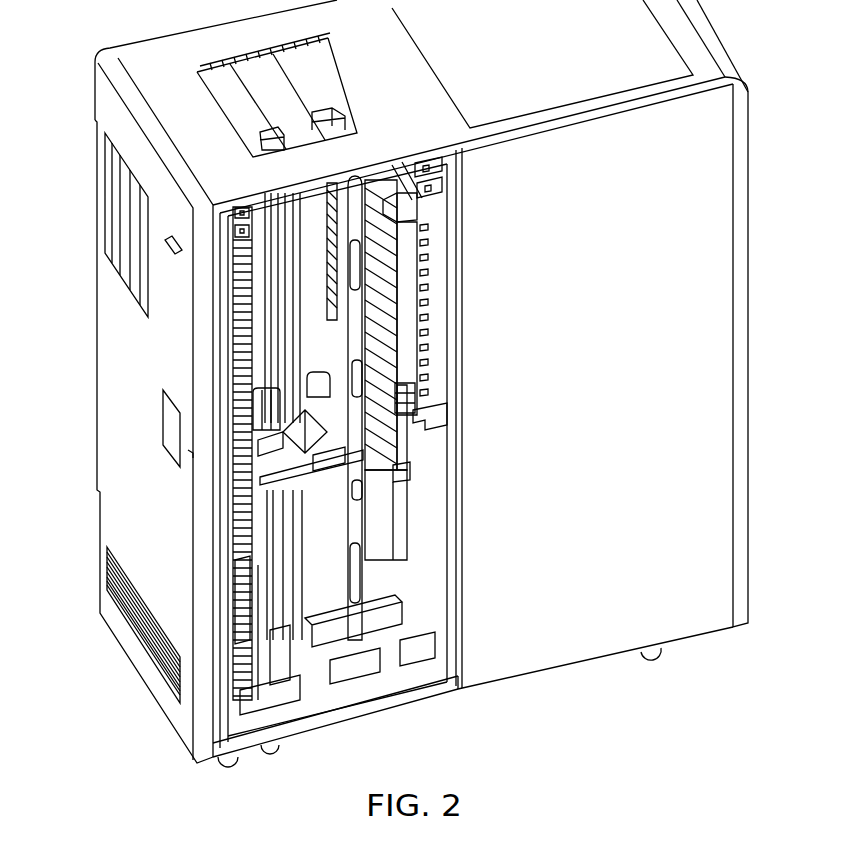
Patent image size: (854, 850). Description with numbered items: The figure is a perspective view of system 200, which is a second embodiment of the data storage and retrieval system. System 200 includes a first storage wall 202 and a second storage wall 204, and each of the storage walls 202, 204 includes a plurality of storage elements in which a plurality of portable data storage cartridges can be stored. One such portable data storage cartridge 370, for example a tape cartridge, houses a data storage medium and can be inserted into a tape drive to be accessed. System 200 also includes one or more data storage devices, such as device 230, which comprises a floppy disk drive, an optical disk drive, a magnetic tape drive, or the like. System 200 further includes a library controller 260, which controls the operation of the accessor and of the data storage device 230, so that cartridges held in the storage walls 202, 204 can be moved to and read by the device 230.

The data storage and retrieval system 200 is at (594, 662).
The first storage wall 202 is at (407, 255).
The second storage wall 204 is at (232, 322).
The data storage device 230 is at (400, 470).
The library controller 260 is at (403, 500).
The portable data storage cartridge 370 is at (407, 383).